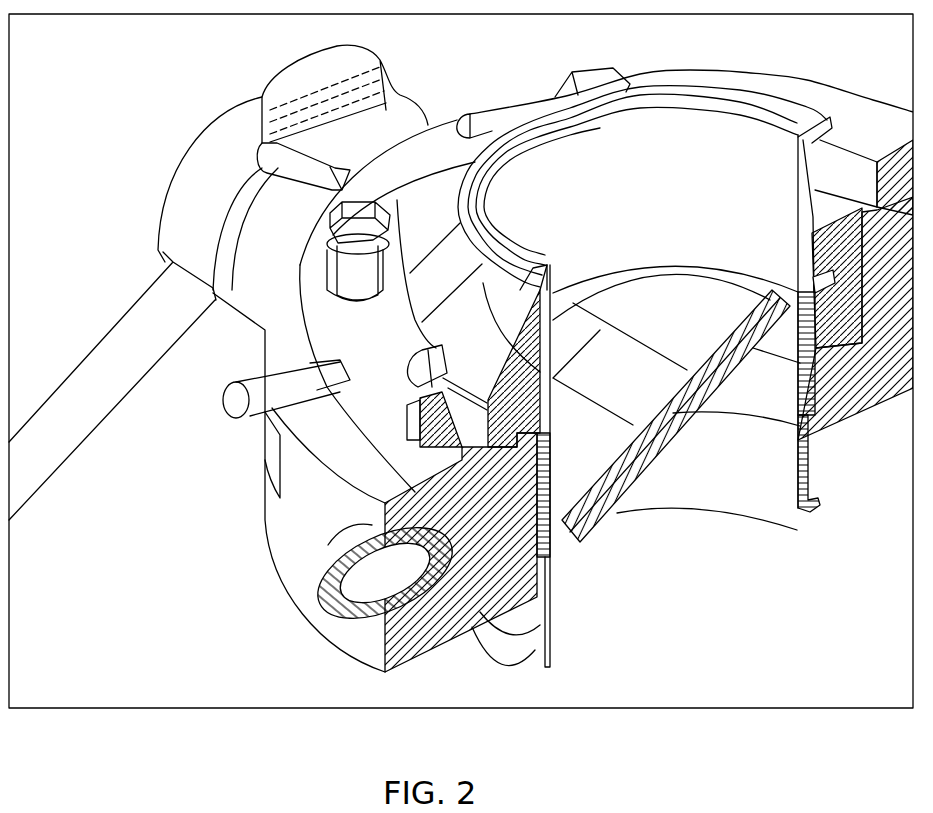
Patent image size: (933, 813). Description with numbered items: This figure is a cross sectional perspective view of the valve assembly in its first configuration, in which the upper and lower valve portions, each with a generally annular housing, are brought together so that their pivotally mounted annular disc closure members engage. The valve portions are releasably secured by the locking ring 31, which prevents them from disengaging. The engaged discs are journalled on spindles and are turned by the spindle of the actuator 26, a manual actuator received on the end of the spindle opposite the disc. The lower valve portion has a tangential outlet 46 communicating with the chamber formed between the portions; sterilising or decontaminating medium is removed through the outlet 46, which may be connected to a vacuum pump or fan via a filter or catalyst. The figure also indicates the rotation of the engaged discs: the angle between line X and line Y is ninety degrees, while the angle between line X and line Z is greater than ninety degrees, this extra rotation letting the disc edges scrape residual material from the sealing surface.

The actuator 26 is at (258, 215).
The locking ring 31 is at (443, 127).
The tangential outlet 46 is at (322, 612).
The line X is at (667, 443).
The line Y is at (757, 387).
The line Z is at (790, 293).